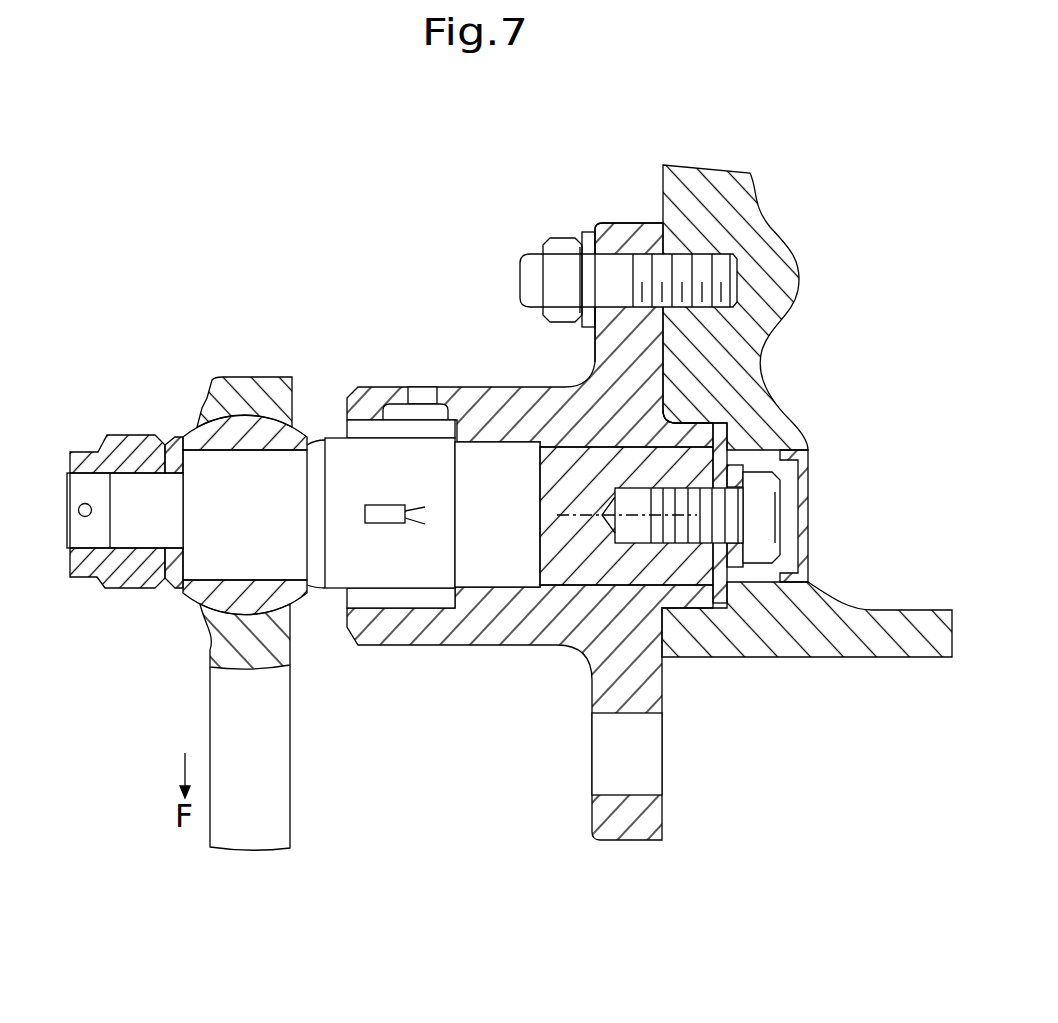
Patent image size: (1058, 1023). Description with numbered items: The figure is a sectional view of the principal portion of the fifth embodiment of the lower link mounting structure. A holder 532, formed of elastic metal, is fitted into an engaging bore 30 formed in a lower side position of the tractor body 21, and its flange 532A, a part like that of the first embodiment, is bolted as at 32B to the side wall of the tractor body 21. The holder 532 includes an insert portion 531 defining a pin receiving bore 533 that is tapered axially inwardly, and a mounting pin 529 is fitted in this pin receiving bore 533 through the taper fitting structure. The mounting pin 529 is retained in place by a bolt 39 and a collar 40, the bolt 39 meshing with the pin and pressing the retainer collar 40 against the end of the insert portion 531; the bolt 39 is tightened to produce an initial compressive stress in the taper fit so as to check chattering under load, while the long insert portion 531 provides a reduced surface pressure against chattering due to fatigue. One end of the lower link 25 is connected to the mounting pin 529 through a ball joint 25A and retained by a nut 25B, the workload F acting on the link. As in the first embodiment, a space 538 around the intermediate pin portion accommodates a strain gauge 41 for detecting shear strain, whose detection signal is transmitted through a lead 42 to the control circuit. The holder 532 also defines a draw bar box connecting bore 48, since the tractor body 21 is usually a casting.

The tractor body 21 is at (797, 647).
The lower link 25 is at (278, 807).
The ball joint 25A is at (232, 603).
The nut 25B is at (112, 577).
The mounting pin 529 is at (200, 557).
The engaging bore 30 is at (765, 462).
The bolt 32B is at (558, 240).
The bolt 39 is at (765, 525).
The retainer collar 40 is at (722, 605).
The strain gauge 41 is at (386, 523).
The lead 42 is at (808, 472).
The draw bar box connecting bore 48 is at (607, 757).
The insert portion 531 is at (695, 437).
The holder 532 is at (508, 645).
The mounting flange 532A is at (613, 226).
The pin receiving bore 533 is at (492, 448).
The plug 538 is at (365, 428).